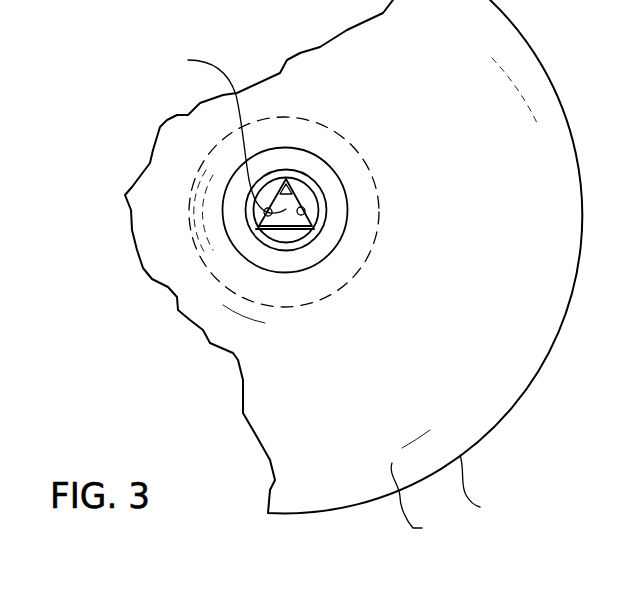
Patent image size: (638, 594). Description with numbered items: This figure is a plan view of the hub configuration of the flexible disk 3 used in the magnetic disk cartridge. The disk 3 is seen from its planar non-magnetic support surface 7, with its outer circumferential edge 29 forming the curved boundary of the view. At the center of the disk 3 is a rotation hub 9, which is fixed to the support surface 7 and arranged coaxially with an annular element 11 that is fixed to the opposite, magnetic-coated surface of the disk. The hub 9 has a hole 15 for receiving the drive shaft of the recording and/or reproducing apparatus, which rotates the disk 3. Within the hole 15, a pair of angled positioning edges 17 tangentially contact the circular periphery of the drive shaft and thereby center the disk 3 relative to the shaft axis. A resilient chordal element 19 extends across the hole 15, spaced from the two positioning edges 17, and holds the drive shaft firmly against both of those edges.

The flexible disk 3 is at (511, 406).
The non-magnetic support surface 7 is at (413, 501).
The circumferential edge 29 is at (483, 485).
The annular element 11 is at (336, 128).
The rotation hub 9 is at (268, 246).
The resilient chordal element 19 is at (294, 230).
The angled positioning edges 17 is at (265, 209).
The hole 15 is at (225, 131).